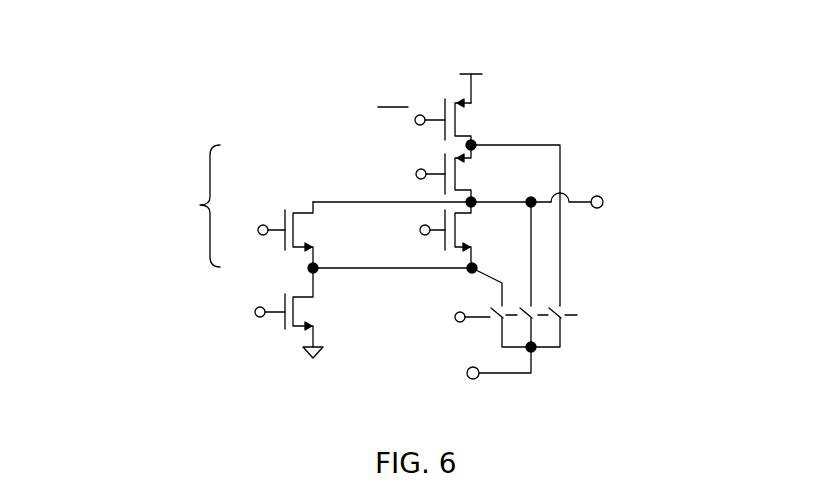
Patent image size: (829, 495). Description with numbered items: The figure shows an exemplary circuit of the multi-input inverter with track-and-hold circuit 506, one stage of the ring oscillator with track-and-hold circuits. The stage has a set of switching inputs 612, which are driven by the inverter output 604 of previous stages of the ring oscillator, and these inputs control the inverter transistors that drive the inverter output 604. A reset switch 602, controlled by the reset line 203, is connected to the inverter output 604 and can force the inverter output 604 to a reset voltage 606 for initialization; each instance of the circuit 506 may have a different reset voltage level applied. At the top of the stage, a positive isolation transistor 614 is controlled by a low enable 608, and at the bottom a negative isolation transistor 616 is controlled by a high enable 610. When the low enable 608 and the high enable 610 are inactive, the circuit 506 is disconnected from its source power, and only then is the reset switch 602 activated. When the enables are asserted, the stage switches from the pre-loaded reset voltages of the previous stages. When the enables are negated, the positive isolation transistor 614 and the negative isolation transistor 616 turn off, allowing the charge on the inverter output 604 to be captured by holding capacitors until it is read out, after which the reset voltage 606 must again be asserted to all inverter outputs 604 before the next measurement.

The multi-input inverter with track-and-hold circuit 506 is at (190, 46).
The low enable 608 is at (437, 115).
The positive isolation transistor 614 is at (466, 117).
The inverter output 604 is at (580, 198).
The set of switching inputs 612 is at (200, 205).
The reset line 203 is at (486, 311).
The reset switch 602 is at (577, 315).
The high enable 610 is at (277, 317).
The negative isolation transistor 616 is at (318, 313).
The reset voltage 606 is at (497, 375).